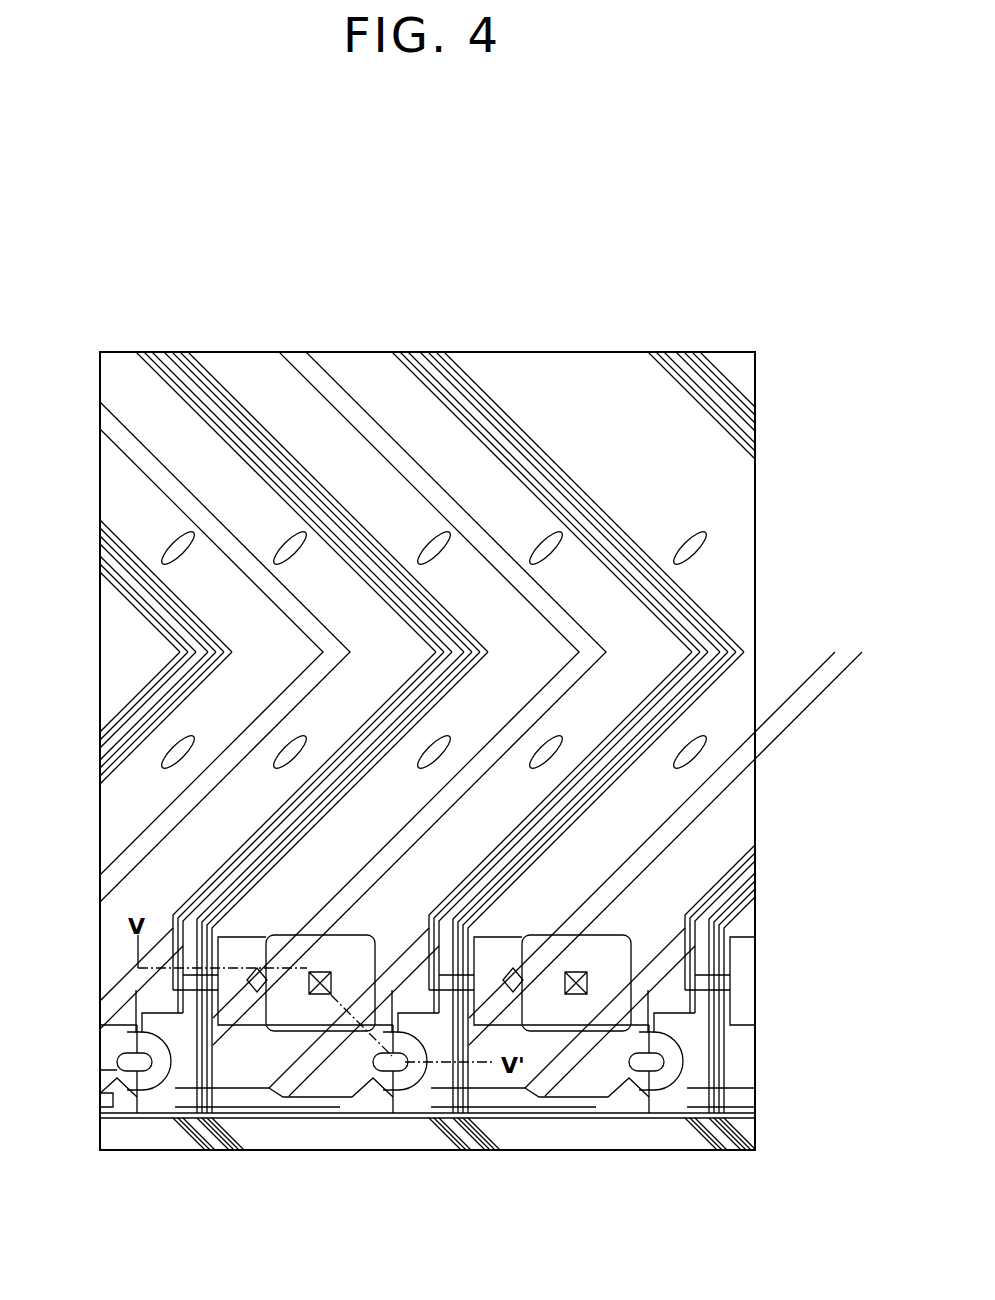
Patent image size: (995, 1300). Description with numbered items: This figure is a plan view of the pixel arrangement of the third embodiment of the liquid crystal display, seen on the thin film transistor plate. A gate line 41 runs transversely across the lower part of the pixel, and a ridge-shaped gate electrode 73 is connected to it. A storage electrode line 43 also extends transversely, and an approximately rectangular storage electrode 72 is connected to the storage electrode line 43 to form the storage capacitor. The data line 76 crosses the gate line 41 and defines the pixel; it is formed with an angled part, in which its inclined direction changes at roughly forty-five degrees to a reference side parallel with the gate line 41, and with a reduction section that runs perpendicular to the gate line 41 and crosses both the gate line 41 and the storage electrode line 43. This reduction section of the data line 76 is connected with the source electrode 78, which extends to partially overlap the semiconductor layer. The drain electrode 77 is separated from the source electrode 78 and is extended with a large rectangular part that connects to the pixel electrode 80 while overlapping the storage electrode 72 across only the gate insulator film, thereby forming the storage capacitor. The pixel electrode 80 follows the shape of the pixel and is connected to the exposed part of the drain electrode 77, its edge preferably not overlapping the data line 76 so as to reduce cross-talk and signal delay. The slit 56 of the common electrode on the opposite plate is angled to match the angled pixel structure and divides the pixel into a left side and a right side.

The slit 56 is at (568, 622).
The pixel electrode 80 is at (622, 712).
The drain electrode 77 is at (352, 952).
The source electrode 78 is at (407, 1022).
The data line 76 is at (210, 945).
The storage electrode line 43 is at (242, 1012).
The storage electrode 72 is at (255, 1050).
The gate line 41 is at (300, 1113).
The gate electrode 73 is at (377, 1103).